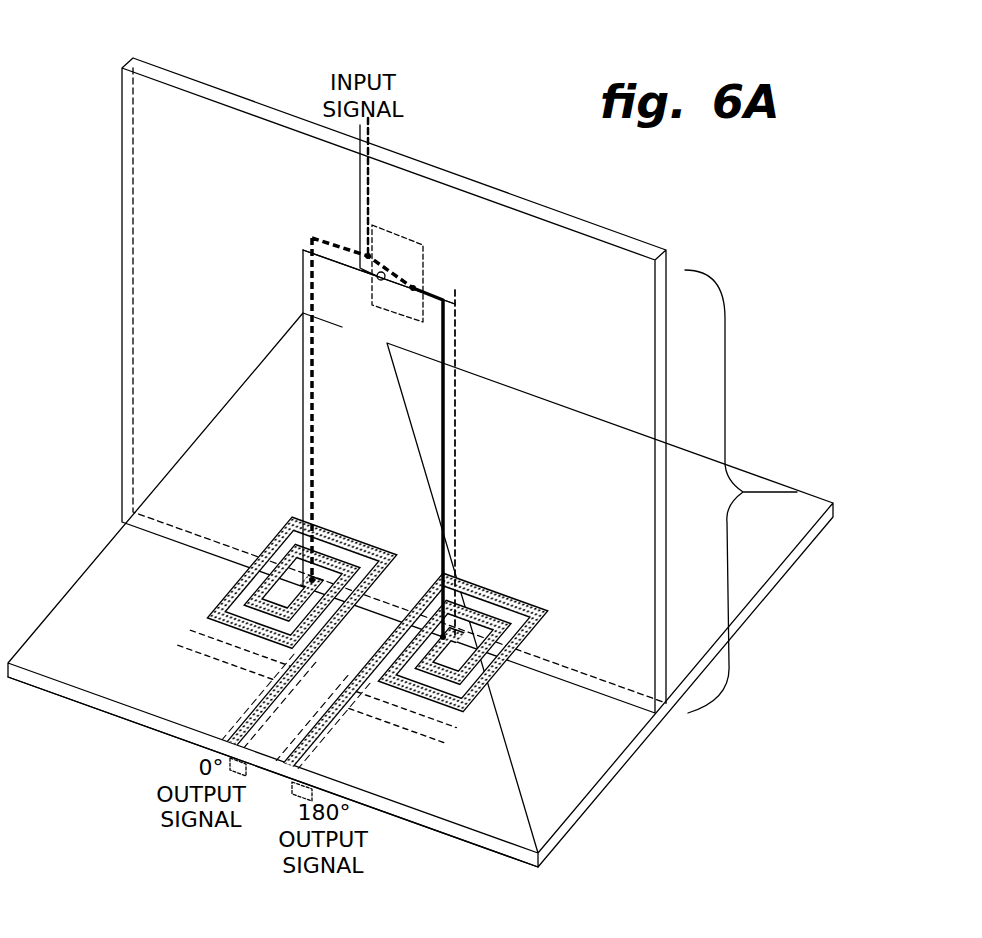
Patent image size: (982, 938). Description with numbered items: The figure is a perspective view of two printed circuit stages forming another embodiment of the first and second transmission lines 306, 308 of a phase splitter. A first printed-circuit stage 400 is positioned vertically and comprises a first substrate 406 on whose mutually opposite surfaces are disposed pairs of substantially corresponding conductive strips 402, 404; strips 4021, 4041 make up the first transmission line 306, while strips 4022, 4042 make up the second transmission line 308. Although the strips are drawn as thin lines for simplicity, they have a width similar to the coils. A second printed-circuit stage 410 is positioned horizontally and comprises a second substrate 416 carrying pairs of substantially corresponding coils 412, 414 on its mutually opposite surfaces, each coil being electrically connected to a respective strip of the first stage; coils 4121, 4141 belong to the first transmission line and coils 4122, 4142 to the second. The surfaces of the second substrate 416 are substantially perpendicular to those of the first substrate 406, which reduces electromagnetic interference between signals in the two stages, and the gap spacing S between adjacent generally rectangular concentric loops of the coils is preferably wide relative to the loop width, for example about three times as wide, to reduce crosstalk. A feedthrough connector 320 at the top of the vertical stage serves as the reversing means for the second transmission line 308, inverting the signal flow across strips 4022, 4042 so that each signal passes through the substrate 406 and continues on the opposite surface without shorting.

The first printed-circuit stage 400 is at (797, 492).
The first substrate 406 is at (128, 62).
The second printed-circuit stage 410 is at (555, 873).
The second substrate 416 is at (435, 850).
The conductive strip 402 is at (339, 439).
The strip for the first transmission line 4021 is at (300, 277).
The strip for the second transmission line 4022 is at (448, 298).
The conductive strip 404 is at (403, 442).
The strip for the first transmission line 4041 is at (307, 390).
The strip for the second transmission line 4042 is at (457, 340).
The first transmission line 306 is at (387, 527).
The second transmission line 308 is at (497, 580).
The feedthrough connector 320 is at (398, 232).
The coil 412 is at (363, 661).
The coil for the first transmission line 4121 is at (212, 600).
The coil for the second transmission line 4122 is at (530, 600).
The coil 414 is at (384, 712).
The coil for the first transmission line 4141 is at (233, 657).
The coil for the second transmission line 4142 is at (543, 650).
The spacing S is at (362, 270).